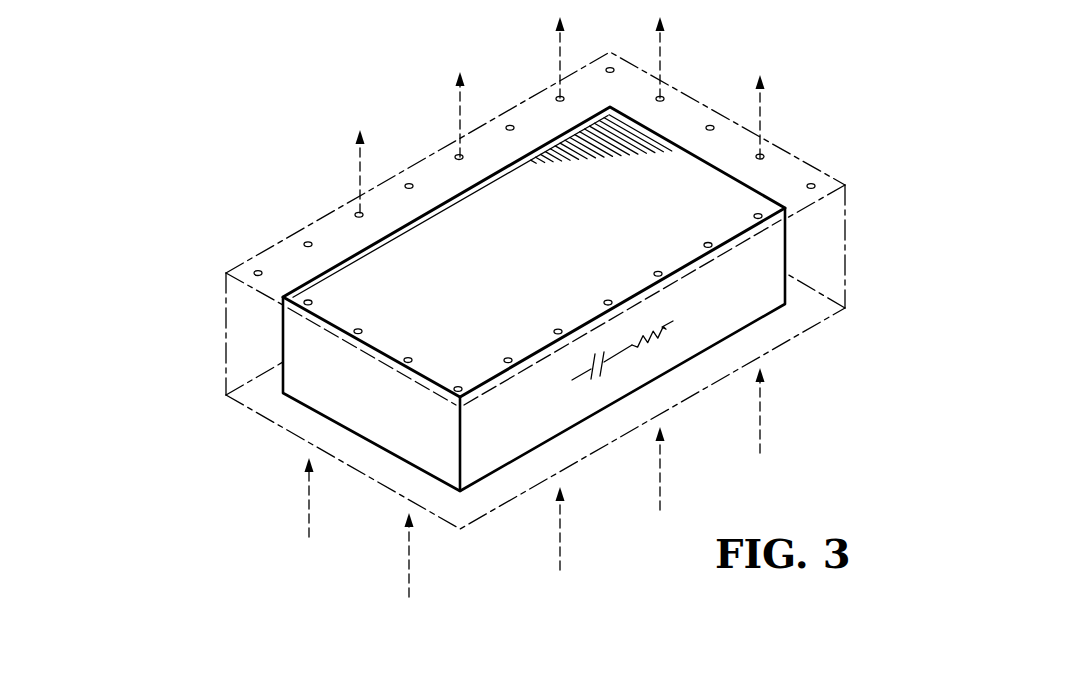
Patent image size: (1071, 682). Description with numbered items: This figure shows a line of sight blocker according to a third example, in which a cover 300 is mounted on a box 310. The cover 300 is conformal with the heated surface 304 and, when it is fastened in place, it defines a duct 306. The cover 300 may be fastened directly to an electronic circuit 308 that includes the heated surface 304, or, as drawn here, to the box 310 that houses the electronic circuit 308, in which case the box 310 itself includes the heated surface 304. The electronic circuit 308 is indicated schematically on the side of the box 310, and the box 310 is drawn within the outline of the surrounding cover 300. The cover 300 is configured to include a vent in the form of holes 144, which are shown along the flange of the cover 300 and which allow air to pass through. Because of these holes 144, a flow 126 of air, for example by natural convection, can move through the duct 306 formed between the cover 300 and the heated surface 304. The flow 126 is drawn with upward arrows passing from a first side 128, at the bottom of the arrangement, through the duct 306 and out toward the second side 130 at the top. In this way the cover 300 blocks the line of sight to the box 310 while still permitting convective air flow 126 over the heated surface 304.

The second side 130 is at (235, 188).
The cover 300 is at (847, 212).
The holes 144 is at (713, 126).
The box 310 is at (347, 258).
The heated surface 304 is at (318, 389).
The electronic circuit 308 is at (693, 322).
The flow 126 is at (763, 418).
The first side 128 is at (277, 488).
The duct 306 is at (594, 475).